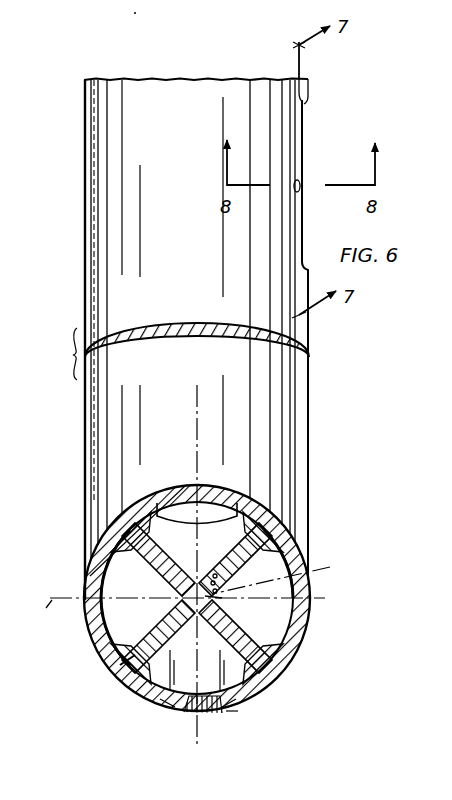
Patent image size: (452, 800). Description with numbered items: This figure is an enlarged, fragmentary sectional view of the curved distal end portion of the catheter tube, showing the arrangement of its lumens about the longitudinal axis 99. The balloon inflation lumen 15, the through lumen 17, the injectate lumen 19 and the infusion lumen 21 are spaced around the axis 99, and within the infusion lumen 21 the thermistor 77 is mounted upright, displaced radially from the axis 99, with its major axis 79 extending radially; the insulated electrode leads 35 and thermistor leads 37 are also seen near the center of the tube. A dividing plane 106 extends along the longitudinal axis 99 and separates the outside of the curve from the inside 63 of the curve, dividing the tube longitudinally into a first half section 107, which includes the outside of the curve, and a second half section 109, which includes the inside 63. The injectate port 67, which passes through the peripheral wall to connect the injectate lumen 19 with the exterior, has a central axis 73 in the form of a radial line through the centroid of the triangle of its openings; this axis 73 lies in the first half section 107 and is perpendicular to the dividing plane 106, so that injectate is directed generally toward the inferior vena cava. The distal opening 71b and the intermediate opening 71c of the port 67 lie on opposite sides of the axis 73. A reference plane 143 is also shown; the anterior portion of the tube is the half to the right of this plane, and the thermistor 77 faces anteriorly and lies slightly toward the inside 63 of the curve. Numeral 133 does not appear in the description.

The cylindrical housing 133 is at (262, 52).
The inside of the curve 63 is at (98, 225).
The thermistor 77 is at (301, 186).
The reference plane 143 is at (195, 410).
The dividing plane 106 is at (173, 600).
The second half section 109 is at (90, 555).
The through lumen 17 is at (102, 637).
The infusion lumen 21 is at (302, 632).
The longitudinal axis 99 is at (192, 593).
The balloon inflation lumen 15 is at (175, 518).
The injectate lumen 19 is at (280, 678).
The first half section 107 is at (122, 665).
The thermistor leads 37 is at (220, 581).
The electrode leads 35 is at (218, 599).
The major axis 79 is at (357, 562).
The central axis 73 is at (197, 745).
The distal opening 71b is at (160, 716).
The intermediate opening 71c is at (212, 712).
The injectate port 67 is at (234, 716).